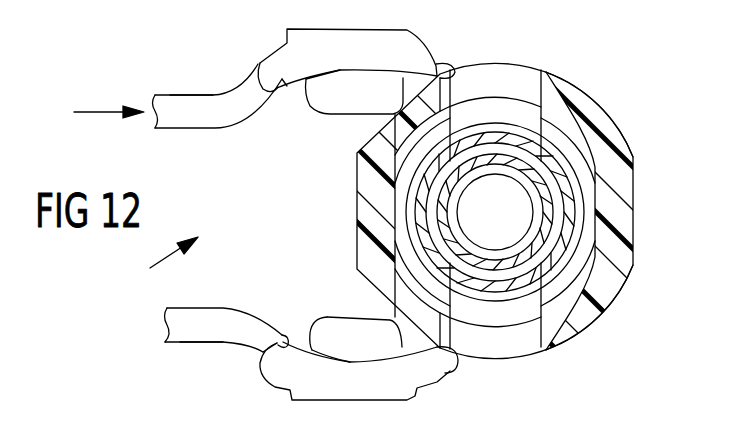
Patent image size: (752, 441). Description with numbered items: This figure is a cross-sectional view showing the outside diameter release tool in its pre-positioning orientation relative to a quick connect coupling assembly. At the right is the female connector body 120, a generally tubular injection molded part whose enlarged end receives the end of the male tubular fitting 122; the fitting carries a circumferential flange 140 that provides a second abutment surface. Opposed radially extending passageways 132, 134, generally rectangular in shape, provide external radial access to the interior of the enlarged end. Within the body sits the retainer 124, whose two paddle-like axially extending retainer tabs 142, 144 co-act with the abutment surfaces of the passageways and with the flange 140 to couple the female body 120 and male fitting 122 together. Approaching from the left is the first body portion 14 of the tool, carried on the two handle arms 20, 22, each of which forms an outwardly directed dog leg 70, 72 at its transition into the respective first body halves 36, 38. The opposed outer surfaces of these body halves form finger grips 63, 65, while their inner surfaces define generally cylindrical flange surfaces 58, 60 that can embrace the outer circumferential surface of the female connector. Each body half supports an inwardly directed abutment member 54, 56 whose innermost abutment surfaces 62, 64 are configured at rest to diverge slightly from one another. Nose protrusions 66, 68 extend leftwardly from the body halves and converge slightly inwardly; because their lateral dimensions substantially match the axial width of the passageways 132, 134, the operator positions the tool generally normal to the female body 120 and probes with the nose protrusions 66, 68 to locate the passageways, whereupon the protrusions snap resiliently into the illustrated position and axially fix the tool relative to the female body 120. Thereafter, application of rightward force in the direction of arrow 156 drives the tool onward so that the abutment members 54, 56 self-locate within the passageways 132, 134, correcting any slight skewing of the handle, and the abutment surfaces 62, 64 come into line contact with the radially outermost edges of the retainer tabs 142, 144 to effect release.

The first body portion 14 is at (150, 268).
The arm 20 is at (173, 322).
The arm 22 is at (165, 100).
The first body half 36 is at (275, 368).
The first body half 38 is at (272, 68).
The abutment member 54 is at (332, 333).
The abutment member 56 is at (332, 98).
The flange surface 58 is at (283, 338).
The flange surface 60 is at (290, 88).
The abutment surface 62 is at (358, 319).
The finger grip 63 is at (310, 403).
The abutment surface 64 is at (345, 116).
The finger grip 65 is at (343, 30).
The nose protrusion 66 is at (451, 374).
The nose protrusion 68 is at (450, 66).
The dog leg 70 is at (230, 332).
The dog leg 72 is at (224, 105).
The female connector body 120 is at (622, 200).
The male tubular fitting 122 is at (547, 188).
The retainer 124 is at (562, 157).
The passageway 132 is at (545, 78).
The passageway 134 is at (548, 345).
The circumferential flange 140 is at (562, 235).
The retainer tab 142 is at (502, 107).
The retainer tab 144 is at (498, 322).
The arrow 156 is at (90, 112).